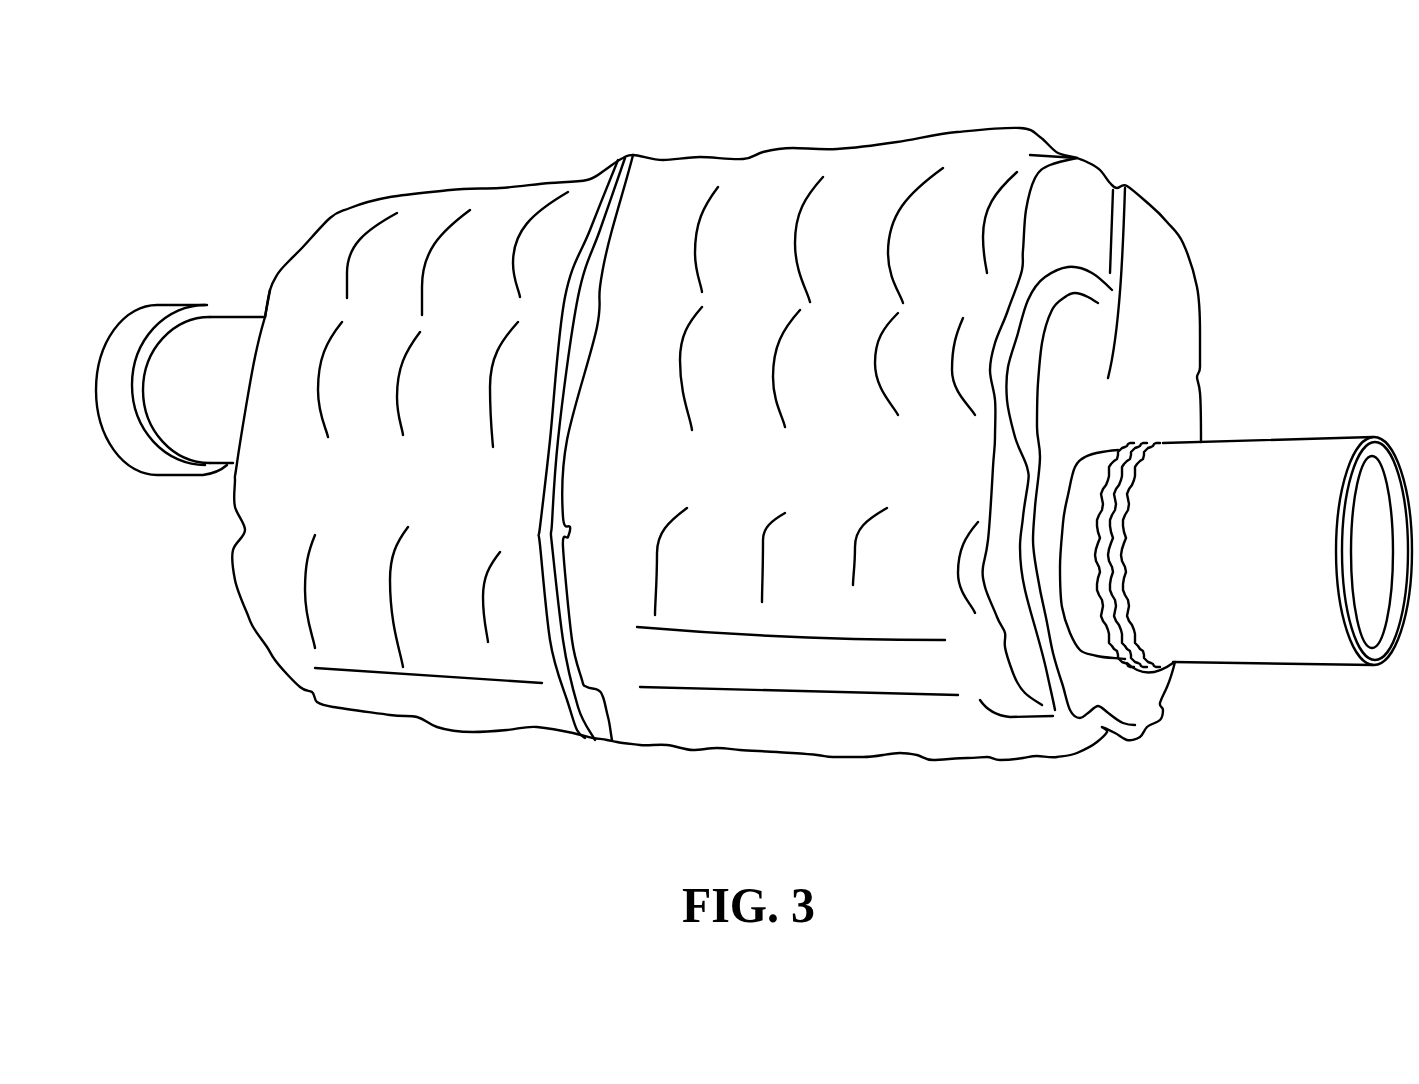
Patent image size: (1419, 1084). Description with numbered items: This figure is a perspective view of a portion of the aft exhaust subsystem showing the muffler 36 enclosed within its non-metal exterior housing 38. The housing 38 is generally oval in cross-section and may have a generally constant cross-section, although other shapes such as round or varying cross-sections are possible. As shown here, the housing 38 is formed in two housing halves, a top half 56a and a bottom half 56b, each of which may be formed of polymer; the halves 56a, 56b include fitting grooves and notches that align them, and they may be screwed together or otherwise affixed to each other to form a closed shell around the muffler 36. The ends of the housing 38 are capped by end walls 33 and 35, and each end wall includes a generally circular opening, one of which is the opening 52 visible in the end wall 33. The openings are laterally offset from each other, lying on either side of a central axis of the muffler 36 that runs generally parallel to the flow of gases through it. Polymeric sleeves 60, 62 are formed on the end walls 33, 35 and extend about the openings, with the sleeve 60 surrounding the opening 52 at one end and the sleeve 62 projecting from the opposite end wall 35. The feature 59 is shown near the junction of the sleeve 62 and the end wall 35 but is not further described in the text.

The muffler 36 is at (1148, 142).
The top half 56a is at (765, 173).
The bottom half 56b is at (1157, 237).
The end wall 33 is at (1162, 308).
The opening 52 is at (1135, 443).
The polymeric sleeve 60 is at (1262, 648).
The polymeric sleeve 62 is at (202, 438).
The seam 59 is at (268, 303).
The end wall 35 is at (252, 623).
The exterior housing 38 is at (873, 730).